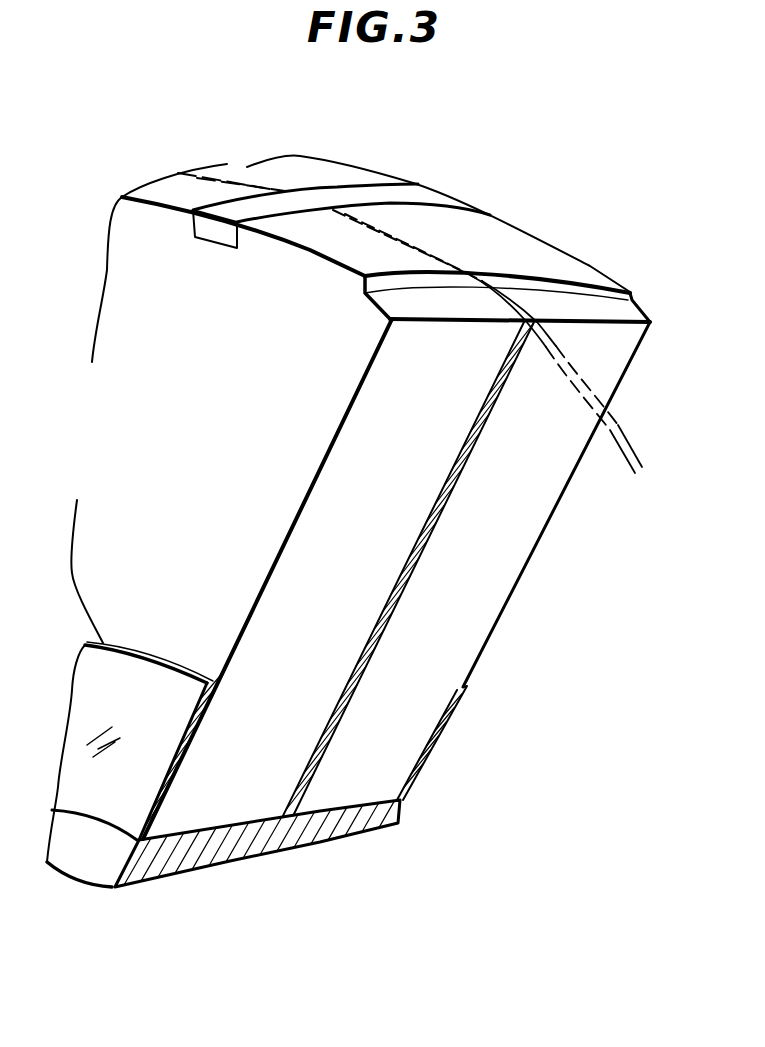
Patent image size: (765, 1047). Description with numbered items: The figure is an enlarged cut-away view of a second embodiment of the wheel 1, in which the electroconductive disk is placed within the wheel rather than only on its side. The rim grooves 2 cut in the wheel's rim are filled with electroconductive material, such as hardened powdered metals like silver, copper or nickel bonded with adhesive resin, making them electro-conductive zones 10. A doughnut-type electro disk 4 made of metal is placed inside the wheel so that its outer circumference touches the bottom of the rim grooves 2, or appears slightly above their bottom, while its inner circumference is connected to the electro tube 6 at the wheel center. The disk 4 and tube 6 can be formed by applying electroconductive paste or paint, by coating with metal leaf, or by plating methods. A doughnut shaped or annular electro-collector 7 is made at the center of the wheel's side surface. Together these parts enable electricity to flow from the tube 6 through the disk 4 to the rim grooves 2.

The block body (charge / workpiece) 1 is at (495, 230).
The rim groove 2 is at (585, 292).
The electro disk 4 is at (445, 503).
The electro tube 6 is at (293, 840).
The electro-collector 7 is at (438, 733).
The electro-conductive zone 10 is at (353, 197).